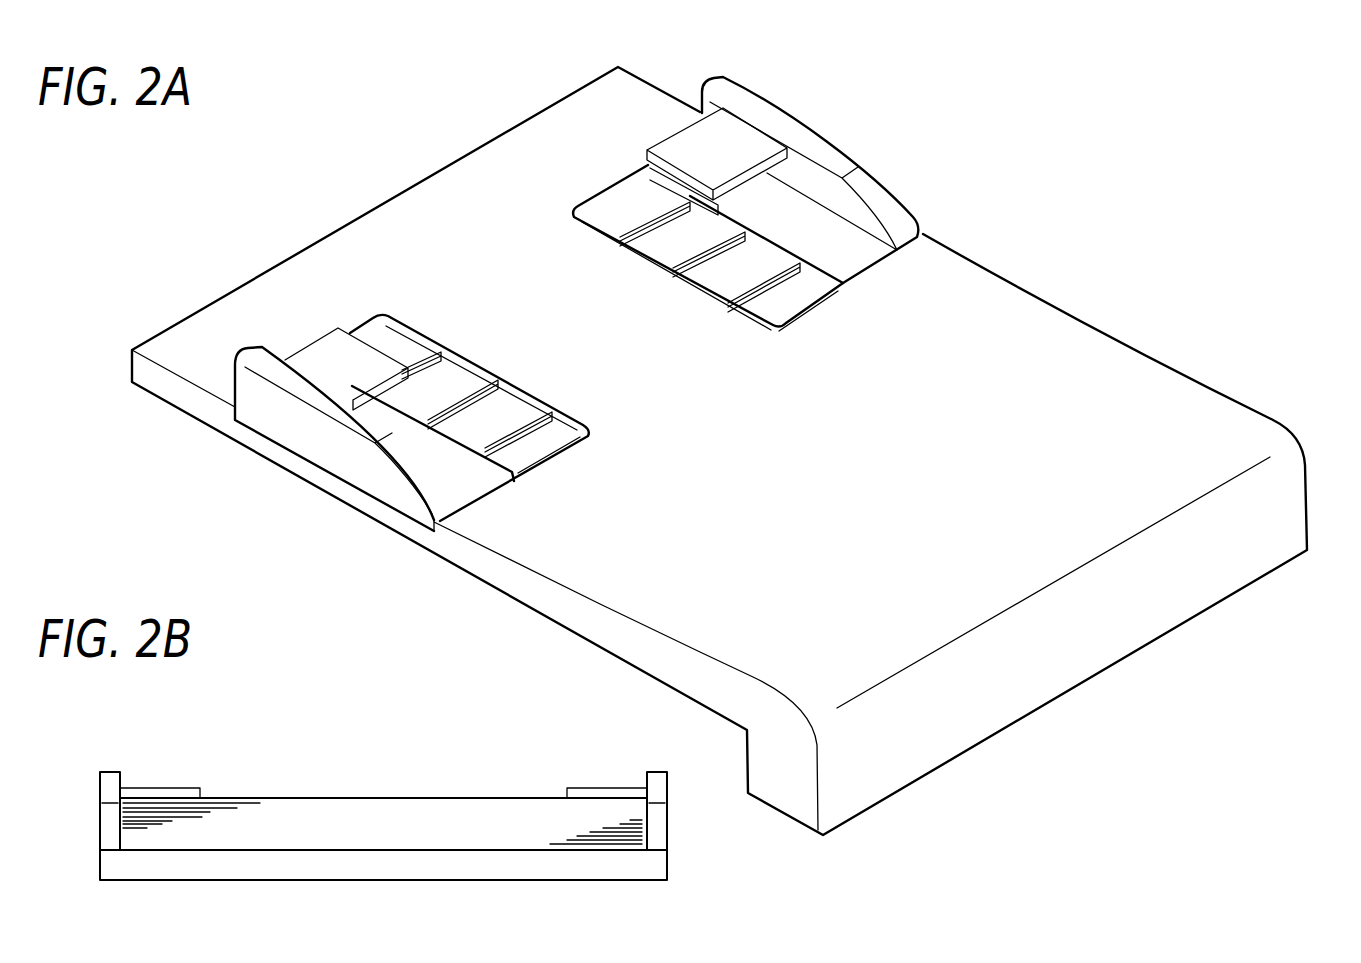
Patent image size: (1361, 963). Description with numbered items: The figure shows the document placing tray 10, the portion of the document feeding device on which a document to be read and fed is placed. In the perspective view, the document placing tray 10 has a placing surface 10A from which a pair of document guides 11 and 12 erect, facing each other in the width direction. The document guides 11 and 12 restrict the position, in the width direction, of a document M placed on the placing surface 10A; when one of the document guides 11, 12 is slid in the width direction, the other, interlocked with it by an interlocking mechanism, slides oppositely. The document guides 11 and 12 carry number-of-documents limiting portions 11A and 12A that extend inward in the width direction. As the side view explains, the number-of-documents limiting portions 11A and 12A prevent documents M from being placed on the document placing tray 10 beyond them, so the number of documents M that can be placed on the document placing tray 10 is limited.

In FIG. 2A, the document placing tray 10 is at (1074, 226).
In FIG. 2B, the document placing tray 10 is at (280, 706).
In FIG. 2A, the placing surface 10A is at (735, 450).
In FIG. 2B, the placing surface 10A is at (337, 849).
In FIG. 2A, the document guide 11 is at (353, 453).
In FIG. 2B, the document guide 11 is at (112, 777).
In FIG. 2A, the number-of-documents limiting portion 11A is at (336, 372).
In FIG. 2B, the number-of-documents limiting portion 11A is at (160, 790).
In FIG. 2A, the document guide 12 is at (836, 152).
In FIG. 2B, the document guide 12 is at (657, 777).
In FIG. 2A, the number-of-documents limiting portion 12A is at (733, 138).
In FIG. 2B, the number-of-documents limiting portion 12A is at (603, 790).
In FIG. 2B, the document M is at (452, 787).